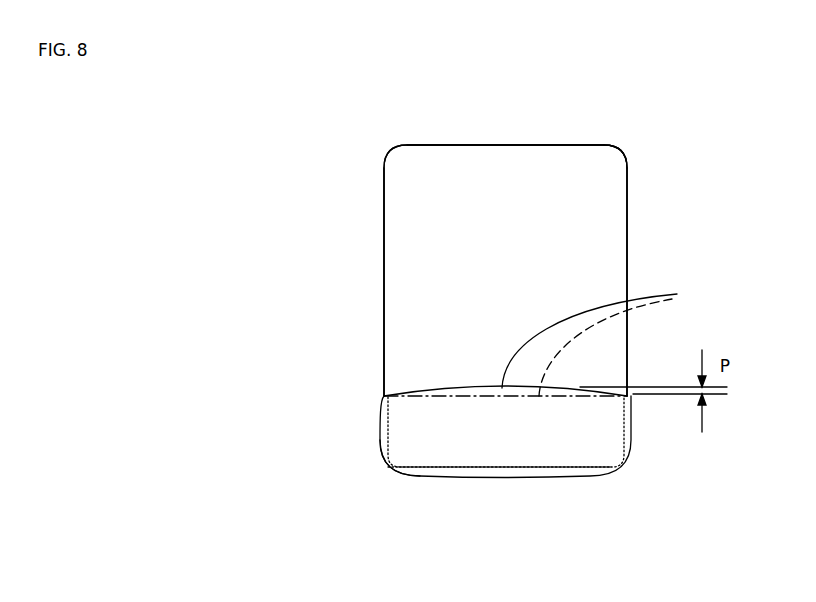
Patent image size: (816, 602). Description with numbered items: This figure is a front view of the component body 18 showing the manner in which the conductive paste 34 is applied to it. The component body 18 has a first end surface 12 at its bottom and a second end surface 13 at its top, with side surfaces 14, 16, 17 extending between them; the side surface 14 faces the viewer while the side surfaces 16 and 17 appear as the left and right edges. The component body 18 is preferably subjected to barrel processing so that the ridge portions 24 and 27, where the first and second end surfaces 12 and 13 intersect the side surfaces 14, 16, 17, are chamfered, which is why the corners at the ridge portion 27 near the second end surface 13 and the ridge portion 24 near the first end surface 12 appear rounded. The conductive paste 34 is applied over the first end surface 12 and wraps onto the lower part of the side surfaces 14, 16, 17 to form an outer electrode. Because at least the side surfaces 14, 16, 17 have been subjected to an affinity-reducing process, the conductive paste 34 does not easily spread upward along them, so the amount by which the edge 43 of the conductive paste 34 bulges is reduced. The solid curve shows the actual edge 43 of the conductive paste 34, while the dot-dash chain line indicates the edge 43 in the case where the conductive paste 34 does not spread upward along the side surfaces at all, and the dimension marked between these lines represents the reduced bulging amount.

The first end surface 12 is at (502, 470).
The second end surface 13 is at (500, 144).
The side surface 14 is at (405, 229).
The side surface 16 is at (384, 282).
The side surface 17 is at (629, 260).
The component body 18 is at (630, 203).
The ridge portion 24 is at (388, 466).
The ridge portion 27 is at (626, 153).
The conductive paste 34 is at (548, 452).
The edge 43 is at (547, 340).